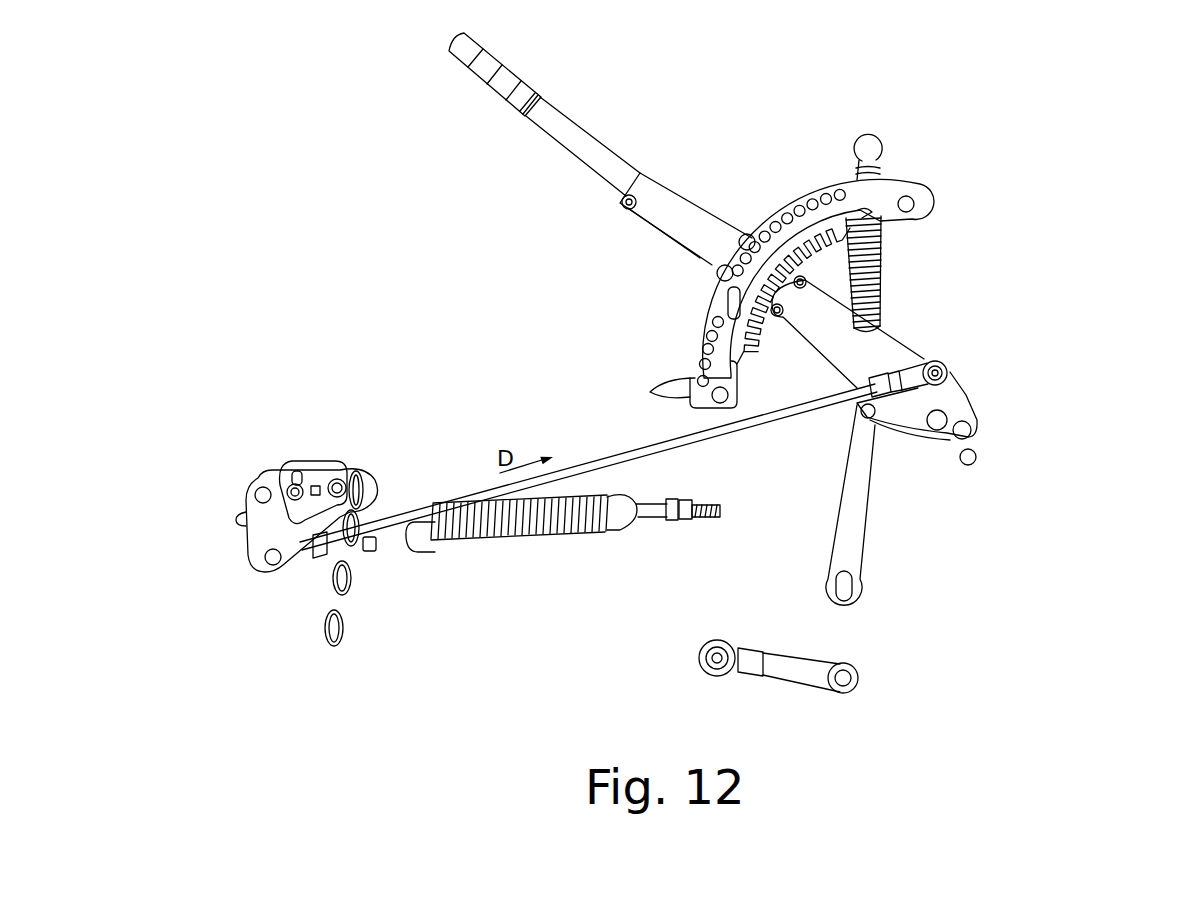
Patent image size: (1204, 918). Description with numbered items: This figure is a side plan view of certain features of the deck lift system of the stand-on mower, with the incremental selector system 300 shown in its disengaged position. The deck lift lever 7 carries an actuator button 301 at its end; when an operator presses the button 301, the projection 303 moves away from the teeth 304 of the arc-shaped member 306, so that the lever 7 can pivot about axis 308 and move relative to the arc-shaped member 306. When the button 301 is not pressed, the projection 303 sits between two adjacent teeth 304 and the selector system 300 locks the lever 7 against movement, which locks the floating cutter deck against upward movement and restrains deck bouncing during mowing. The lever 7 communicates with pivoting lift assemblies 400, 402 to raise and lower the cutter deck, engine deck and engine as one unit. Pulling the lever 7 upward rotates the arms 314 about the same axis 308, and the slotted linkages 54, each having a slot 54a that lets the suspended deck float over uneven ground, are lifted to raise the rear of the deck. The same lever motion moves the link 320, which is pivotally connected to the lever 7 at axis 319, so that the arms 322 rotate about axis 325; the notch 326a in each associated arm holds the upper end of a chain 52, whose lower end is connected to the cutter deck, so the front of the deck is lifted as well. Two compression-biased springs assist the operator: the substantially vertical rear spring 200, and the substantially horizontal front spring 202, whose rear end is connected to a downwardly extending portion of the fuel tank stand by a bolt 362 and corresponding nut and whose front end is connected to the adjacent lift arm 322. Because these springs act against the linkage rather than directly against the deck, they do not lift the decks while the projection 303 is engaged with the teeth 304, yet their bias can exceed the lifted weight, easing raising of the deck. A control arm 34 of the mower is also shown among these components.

The deck lift lever 7 is at (582, 137).
The actuator button 301 is at (450, 43).
The arc-shaped member 306 is at (843, 197).
The teeth 304 is at (877, 262).
The rear spring 200 is at (877, 290).
The axis 319 is at (947, 365).
The pivoting lift assembly 400 is at (1025, 373).
The incremental selector system 300 is at (685, 298).
The notch 326a is at (343, 458).
The axis 325 is at (263, 493).
The link 320 is at (638, 453).
The axis 308 is at (967, 430).
The projection 303 is at (773, 313).
The arms 314 is at (893, 433).
The arms 322 is at (263, 528).
The slotted linkage 54 is at (847, 540).
The slot 54a is at (849, 588).
The pivoting lift assembly 402 is at (208, 563).
The bolt 362 is at (657, 517).
The front spring 202 is at (498, 533).
The chain 52 is at (327, 608).
The control arm 34 is at (798, 677).